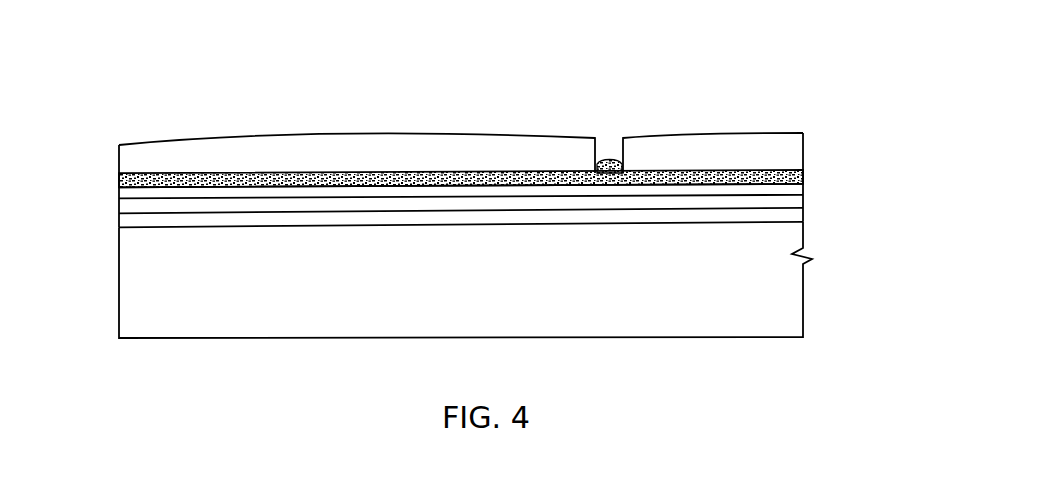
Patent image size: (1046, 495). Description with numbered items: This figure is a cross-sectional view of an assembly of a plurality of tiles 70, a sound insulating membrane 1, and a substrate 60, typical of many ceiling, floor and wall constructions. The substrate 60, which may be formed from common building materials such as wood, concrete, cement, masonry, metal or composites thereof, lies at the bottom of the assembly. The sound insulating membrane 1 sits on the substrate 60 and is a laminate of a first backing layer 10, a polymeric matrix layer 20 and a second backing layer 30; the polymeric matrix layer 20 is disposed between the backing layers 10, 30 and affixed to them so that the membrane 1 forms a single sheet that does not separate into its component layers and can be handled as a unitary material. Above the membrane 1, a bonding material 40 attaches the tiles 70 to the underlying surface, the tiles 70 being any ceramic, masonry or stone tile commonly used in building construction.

The sound insulating membrane 1 is at (112, 188).
The first backing layer 10 is at (797, 189).
The polymeric matrix layer 20 is at (797, 202).
The second backing layer 30 is at (797, 216).
The bonding material 40 is at (715, 178).
The substrate 60 is at (765, 295).
The tiles 70 is at (648, 147).